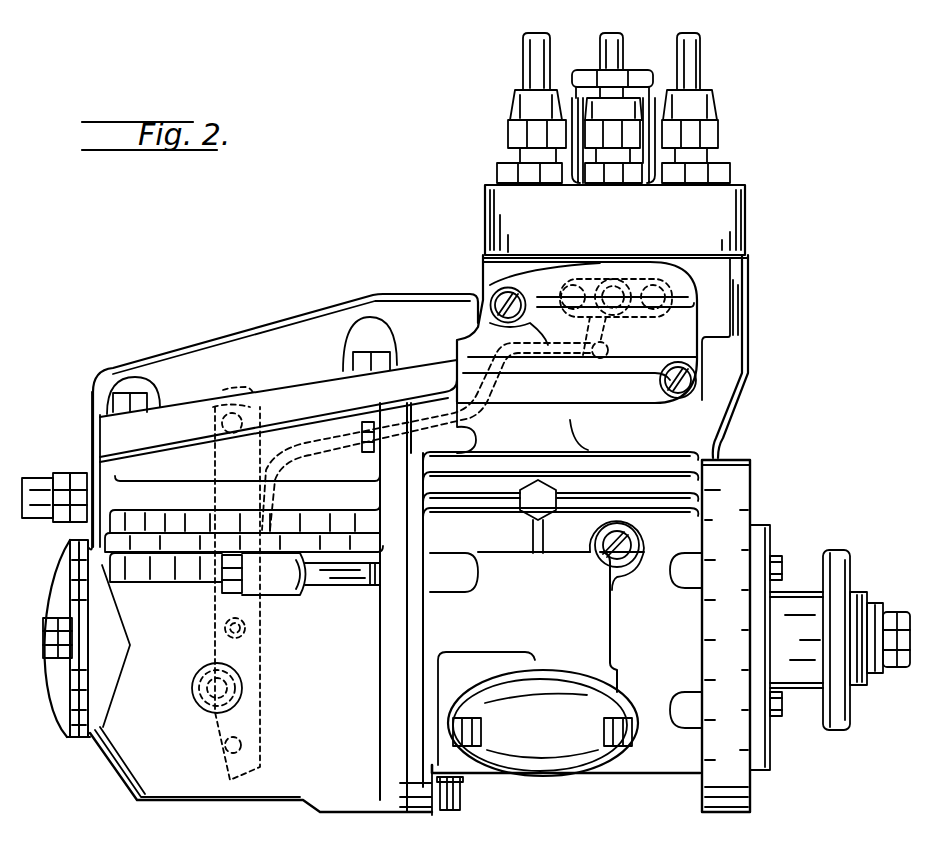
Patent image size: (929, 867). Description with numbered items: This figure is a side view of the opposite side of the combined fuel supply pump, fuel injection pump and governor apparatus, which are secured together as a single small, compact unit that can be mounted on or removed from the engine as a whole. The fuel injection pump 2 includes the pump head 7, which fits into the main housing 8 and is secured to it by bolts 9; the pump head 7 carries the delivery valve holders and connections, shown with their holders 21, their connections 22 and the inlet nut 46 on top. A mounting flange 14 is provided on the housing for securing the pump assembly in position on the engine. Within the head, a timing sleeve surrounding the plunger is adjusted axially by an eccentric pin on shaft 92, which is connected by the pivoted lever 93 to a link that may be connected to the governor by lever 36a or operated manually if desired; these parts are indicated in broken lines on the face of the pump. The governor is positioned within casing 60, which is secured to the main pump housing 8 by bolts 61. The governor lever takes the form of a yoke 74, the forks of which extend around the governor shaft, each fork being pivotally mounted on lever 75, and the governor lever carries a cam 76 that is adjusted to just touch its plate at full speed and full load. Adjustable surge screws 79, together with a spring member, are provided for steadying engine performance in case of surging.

The fuel injection pump 2 is at (723, 383).
The pump head 7 is at (723, 203).
The main housing 8 is at (637, 763).
The bolts 9 is at (502, 173).
The mounting flange 14 is at (740, 788).
The delivery valve holder 21 is at (525, 105).
The delivery pipe connection 22 is at (532, 48).
The lever 36a is at (497, 387).
The fuel inlet connection nut 46 is at (583, 77).
The casing 60 is at (137, 763).
The bolts 61 is at (460, 793).
The yoke 74 is at (230, 467).
The lever 75 is at (207, 718).
The cam 76 is at (245, 395).
The adjustable surge screws 79 is at (32, 490).
The shaft 92 is at (620, 287).
The pivoted lever 93 is at (620, 325).